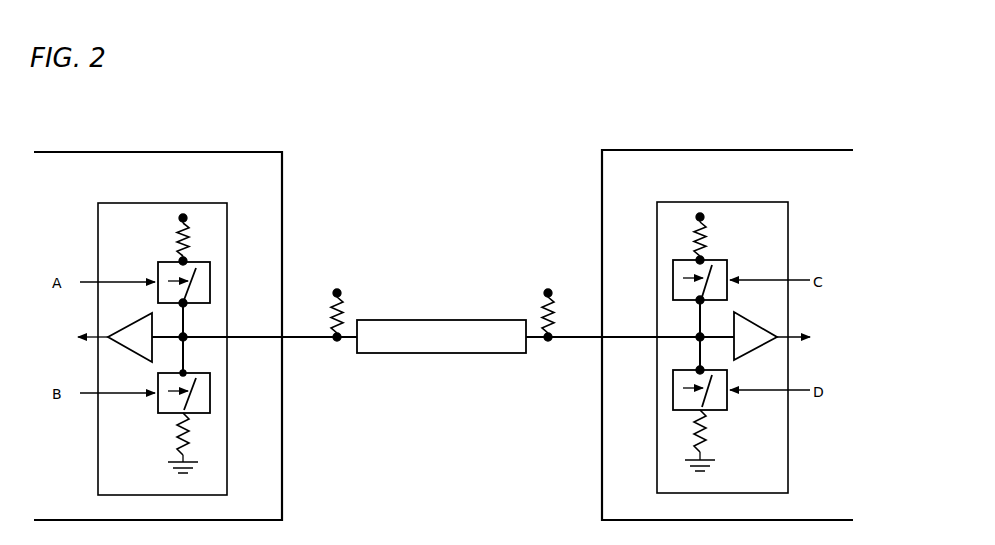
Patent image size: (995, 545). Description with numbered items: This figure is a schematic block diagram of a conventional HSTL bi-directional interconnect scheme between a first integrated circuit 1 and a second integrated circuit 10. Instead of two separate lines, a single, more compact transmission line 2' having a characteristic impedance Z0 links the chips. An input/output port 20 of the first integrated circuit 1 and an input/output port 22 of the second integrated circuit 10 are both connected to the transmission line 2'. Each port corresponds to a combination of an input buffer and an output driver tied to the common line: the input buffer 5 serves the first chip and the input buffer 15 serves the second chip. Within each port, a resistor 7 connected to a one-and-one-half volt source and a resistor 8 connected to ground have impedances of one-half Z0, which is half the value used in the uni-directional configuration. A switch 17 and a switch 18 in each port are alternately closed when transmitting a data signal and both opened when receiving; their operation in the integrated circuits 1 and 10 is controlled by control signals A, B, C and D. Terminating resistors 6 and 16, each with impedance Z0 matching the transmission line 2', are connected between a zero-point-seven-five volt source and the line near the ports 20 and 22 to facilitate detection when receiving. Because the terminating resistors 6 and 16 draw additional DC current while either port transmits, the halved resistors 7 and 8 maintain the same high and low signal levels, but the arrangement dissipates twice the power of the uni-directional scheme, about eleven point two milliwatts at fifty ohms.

The first integrated circuit 1 is at (192, 152).
The second integrated circuit 10 is at (688, 150).
The input/output port 20 is at (194, 203).
The input/output port 22 is at (690, 202).
The resistor 7 is at (190, 236).
The switch 17 is at (210, 265).
The switch 18 is at (210, 405).
The resistor 8 is at (190, 443).
The input buffer 5 is at (128, 345).
The input buffer 15 is at (765, 345).
The terminating resistor 6 is at (332, 320).
The terminating resistor 16 is at (543, 320).
The transmission line 2' is at (441, 320).